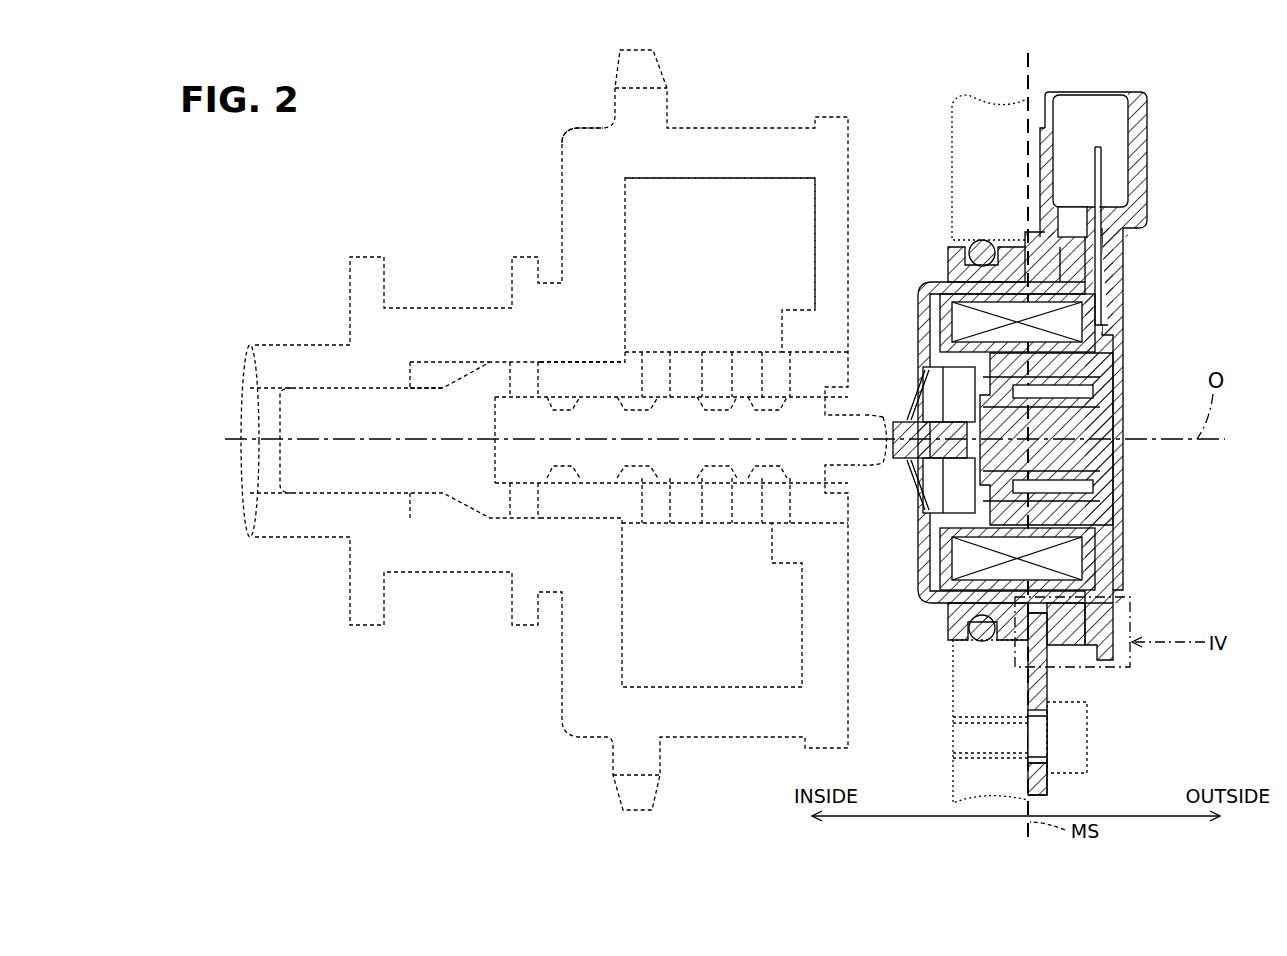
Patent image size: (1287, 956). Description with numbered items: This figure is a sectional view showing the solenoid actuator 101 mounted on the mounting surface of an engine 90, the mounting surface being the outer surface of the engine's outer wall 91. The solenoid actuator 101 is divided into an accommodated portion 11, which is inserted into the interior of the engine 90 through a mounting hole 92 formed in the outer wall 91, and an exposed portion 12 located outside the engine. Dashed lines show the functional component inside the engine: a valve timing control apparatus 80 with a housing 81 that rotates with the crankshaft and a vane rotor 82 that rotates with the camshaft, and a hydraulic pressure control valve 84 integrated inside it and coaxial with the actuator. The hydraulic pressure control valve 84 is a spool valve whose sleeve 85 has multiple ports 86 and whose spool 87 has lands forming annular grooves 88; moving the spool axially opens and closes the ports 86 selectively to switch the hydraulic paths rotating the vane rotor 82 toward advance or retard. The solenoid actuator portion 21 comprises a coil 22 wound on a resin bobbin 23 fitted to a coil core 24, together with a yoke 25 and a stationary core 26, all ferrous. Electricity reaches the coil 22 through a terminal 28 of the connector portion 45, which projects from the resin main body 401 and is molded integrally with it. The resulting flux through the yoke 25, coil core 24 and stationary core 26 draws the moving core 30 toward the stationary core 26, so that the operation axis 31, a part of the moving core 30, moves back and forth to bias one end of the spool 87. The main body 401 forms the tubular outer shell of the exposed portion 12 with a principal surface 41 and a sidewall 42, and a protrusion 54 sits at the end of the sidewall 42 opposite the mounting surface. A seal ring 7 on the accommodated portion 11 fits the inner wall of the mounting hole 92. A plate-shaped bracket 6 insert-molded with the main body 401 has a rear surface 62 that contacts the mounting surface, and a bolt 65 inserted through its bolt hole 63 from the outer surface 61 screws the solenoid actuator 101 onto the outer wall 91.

The engine 90 is at (397, 125).
The valve timing control apparatus 80 is at (724, 117).
The housing 81 is at (598, 155).
The vane rotor 82 is at (745, 210).
The hydraulic pressure control valve 84 is at (415, 186).
The sleeve 85 is at (577, 373).
The ports 86 is at (713, 508).
The spool 87 is at (523, 420).
The annular grooves 88 is at (643, 485).
The accommodated portion 11 is at (1018, 88).
The exposed portion 12 is at (1147, 88).
The outer wall 91 is at (965, 155).
The mounting hole 92 is at (942, 258).
The seal ring 7 is at (977, 253).
The yoke 25 is at (1008, 282).
The connector portion 45 is at (1147, 133).
The terminal 28 is at (1105, 168).
The solenoid actuator 101 is at (1163, 265).
The coil core 24 is at (1083, 330).
The moving core 30 is at (935, 416).
The operation axis 31 is at (912, 438).
The stationary core 26 is at (1072, 428).
The main body 401 is at (1140, 477).
The principal surface 41 is at (1123, 512).
The coil 22 is at (1068, 555).
The bobbin 23 is at (1093, 577).
The solenoid actuator portion 21 is at (928, 608).
The bracket 6 is at (1028, 684).
The sidewall 42 is at (1072, 645).
The protrusion 54 is at (1108, 660).
The bolt hole 63 is at (1040, 718).
The rear surface 62 is at (1028, 775).
The outer surface 61 is at (1050, 783).
The bolt 65 is at (1082, 758).